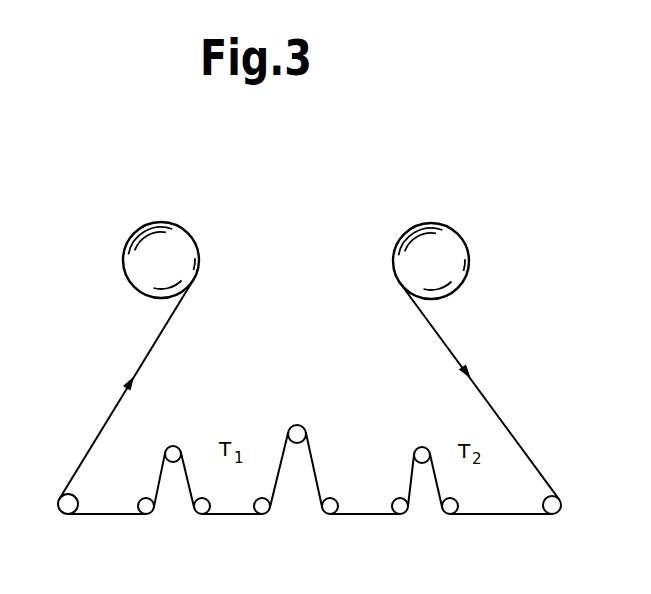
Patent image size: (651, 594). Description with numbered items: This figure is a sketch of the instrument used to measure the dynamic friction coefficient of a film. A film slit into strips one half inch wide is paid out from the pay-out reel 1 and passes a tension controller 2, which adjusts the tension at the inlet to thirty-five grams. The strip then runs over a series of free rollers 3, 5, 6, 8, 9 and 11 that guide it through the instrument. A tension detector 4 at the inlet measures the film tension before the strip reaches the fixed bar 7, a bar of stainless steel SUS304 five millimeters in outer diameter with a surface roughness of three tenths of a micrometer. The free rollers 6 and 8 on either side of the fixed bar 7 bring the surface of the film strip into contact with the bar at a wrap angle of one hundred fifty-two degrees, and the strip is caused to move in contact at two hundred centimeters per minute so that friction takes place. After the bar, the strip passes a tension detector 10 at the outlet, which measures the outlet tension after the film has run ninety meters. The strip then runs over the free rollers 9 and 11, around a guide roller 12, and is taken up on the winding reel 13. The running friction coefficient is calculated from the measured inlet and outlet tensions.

The pay-out reel 1 is at (140, 252).
The tension controller 2 is at (60, 503).
The free roller 3 is at (146, 511).
The tension detector (inlet) 4 is at (174, 452).
The free roller 5 is at (202, 511).
The free roller 6 is at (265, 511).
The fixed bar 7 is at (298, 432).
The free roller 8 is at (330, 511).
The free roller 9 is at (402, 511).
The tension detector (outlet) 10 is at (420, 450).
The free roller 11 is at (452, 511).
The guide roller 12 is at (560, 513).
The winding reel 13 is at (451, 245).